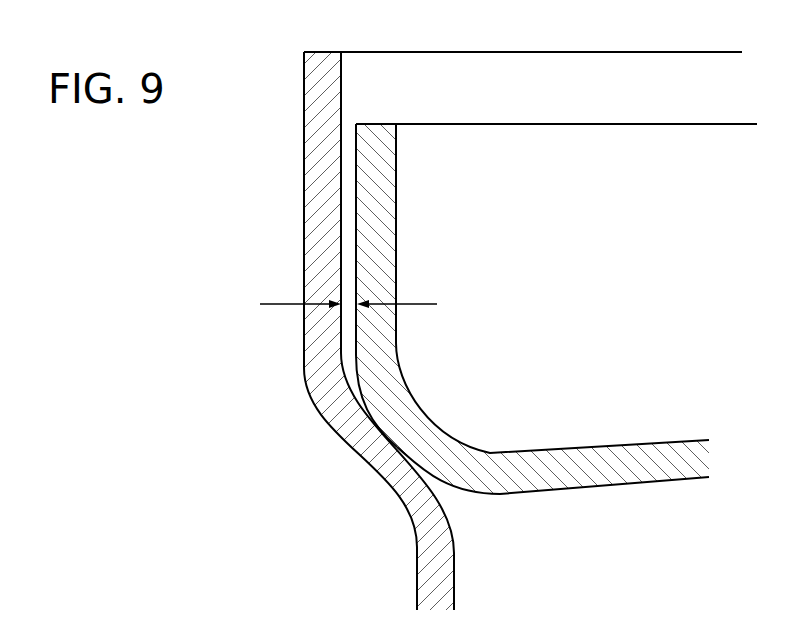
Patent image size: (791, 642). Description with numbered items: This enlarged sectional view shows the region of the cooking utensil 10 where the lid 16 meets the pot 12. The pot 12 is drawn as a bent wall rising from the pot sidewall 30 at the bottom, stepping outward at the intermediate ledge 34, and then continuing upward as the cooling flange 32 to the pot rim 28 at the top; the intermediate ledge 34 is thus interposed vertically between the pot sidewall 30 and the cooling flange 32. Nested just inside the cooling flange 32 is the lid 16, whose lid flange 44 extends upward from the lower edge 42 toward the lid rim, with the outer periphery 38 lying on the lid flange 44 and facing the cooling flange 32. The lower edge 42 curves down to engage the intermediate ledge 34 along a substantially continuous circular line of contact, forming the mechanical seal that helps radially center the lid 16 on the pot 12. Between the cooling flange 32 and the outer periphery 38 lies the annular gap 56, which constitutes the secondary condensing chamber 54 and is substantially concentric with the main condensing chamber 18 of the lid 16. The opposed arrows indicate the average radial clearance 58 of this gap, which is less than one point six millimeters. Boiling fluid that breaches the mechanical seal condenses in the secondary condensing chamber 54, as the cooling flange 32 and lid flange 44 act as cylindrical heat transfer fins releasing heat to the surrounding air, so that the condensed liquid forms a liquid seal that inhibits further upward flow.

The cooking utensil 10 is at (136, 218).
The pot 12 is at (457, 572).
The lid 16 is at (396, 329).
The condensing chamber 18 is at (304, 347).
The pot rim 28 is at (323, 52).
The pot sidewall 30 is at (417, 578).
The cooling flange 32 is at (304, 246).
The intermediate ledge 34 is at (440, 432).
The outer periphery 38 is at (356, 157).
The lower edge 42 is at (440, 432).
The lid flange 44 is at (396, 248).
The secondary condensing chamber 54 is at (347, 238).
The annular gap 56 is at (347, 200).
The average radial clearance 58 is at (417, 304).